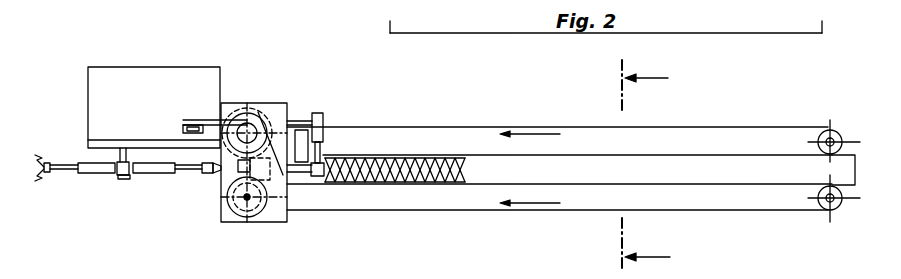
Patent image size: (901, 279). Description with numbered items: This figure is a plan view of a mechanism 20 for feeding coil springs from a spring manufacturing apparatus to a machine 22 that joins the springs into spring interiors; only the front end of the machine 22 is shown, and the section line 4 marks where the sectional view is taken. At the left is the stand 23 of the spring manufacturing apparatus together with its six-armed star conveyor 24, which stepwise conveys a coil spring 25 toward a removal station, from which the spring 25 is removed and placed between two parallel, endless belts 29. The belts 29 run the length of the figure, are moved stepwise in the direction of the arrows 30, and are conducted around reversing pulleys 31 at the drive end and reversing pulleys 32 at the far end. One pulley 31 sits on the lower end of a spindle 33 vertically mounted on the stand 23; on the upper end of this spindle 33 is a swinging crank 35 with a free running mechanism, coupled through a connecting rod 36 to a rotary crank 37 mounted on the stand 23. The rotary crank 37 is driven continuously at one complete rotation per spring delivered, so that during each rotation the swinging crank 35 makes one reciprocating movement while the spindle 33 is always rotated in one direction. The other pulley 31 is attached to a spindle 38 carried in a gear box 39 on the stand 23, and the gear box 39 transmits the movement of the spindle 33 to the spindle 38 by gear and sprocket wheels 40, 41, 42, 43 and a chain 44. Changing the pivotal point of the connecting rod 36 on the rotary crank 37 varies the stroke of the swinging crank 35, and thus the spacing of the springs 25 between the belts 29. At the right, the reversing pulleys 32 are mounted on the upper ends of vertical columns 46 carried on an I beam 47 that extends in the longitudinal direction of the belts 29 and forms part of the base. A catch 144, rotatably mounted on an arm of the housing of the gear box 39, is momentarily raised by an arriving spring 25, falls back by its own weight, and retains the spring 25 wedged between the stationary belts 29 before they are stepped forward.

The section line 4- 4 is at (658, 166).
The mechanism 20 is at (424, 113).
The machine 22 is at (776, 35).
The stand 23 is at (100, 102).
The six-armed star conveyor 24 is at (117, 176).
The coil spring 25 is at (44, 175).
The endless belts 29 is at (657, 157).
The guide rails 30 is at (540, 136).
The reversing pulleys 31 is at (325, 124).
The reversing pulleys 32 is at (841, 137).
The spindle 33 is at (309, 113).
The swinging crank 35 is at (232, 110).
The connecting rod 36 is at (210, 120).
The rotary crank 37 is at (184, 128).
The spindle 38 is at (249, 199).
The gear box 39 is at (221, 216).
The gear and sprocket wheel 40 is at (265, 128).
The gear and sprocket wheel 41 is at (252, 110).
The gear and sprocket wheel 42 is at (290, 182).
The gear and sprocket wheel 43 is at (247, 208).
The chain 44 is at (286, 220).
The vertical columns 46 is at (831, 131).
The I beam 47 is at (848, 170).
The catch 144 is at (321, 180).